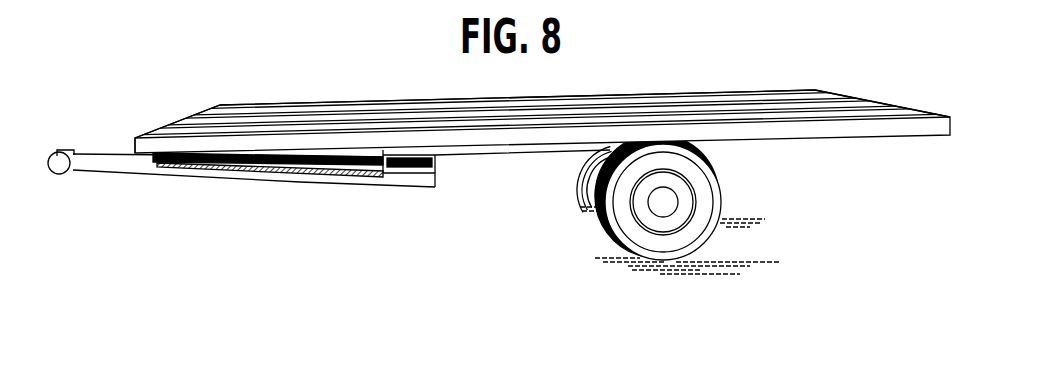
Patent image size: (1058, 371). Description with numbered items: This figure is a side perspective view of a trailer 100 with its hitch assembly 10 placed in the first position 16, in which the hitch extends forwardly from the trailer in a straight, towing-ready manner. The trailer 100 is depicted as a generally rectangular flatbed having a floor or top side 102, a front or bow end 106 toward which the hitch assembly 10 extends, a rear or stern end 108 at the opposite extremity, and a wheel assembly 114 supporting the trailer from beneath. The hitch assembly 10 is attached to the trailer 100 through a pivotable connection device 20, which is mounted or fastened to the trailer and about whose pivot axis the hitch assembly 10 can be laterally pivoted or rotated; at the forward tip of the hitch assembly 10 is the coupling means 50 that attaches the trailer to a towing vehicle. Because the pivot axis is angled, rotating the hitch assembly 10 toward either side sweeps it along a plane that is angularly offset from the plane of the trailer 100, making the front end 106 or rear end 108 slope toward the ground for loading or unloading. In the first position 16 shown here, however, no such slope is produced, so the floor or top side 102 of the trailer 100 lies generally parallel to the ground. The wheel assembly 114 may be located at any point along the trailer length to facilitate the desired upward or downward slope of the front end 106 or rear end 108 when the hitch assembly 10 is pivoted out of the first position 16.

The trailer 100 is at (499, 174).
The top side 102 is at (513, 86).
The front end 106 is at (197, 103).
The rear end 108 is at (838, 92).
The first position 16 is at (125, 140).
The hitch assembly 10 is at (329, 197).
The pivotable connection device 20 is at (442, 160).
The coupling means 50 is at (62, 167).
The wheel assembly 114 is at (638, 275).